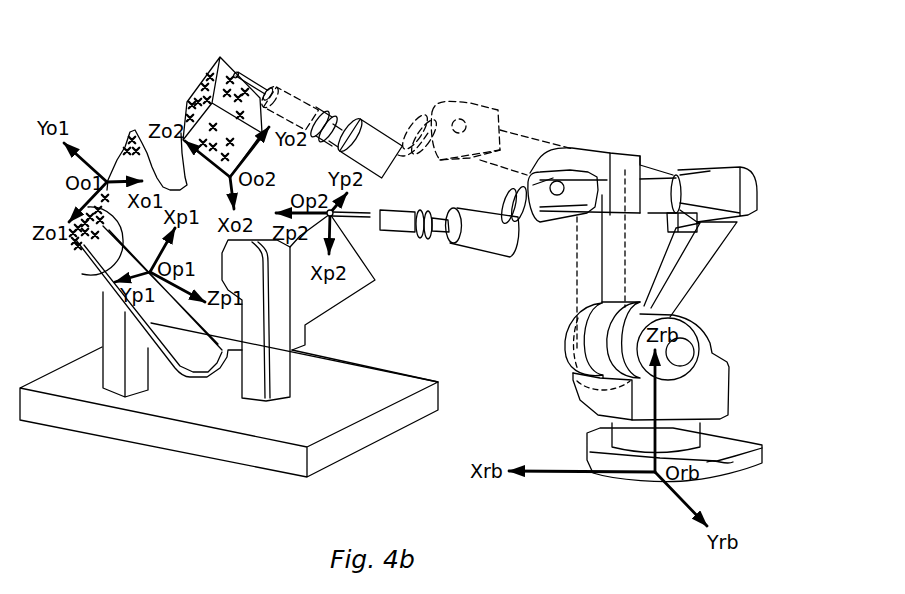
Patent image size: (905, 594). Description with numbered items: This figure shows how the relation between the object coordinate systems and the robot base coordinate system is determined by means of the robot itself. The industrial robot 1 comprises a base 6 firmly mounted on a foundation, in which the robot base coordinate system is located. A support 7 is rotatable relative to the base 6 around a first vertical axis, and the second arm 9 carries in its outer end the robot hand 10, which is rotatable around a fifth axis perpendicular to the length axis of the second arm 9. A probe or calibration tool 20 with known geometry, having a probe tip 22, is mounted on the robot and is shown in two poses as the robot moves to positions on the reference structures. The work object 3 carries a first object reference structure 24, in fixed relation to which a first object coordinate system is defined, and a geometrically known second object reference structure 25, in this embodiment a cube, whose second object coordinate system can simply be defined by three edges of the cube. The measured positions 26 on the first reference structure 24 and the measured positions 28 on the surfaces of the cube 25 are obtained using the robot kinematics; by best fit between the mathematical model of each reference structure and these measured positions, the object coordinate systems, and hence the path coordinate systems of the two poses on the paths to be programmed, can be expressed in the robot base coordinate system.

The industrial robot 1 is at (716, 292).
The work object 3 is at (333, 298).
The base 6 is at (727, 470).
The support 7 is at (722, 381).
The second arm 9 is at (696, 178).
The robot hand 10 is at (468, 118).
The measuring tool 20 is at (297, 102).
The tool tip 22 is at (239, 75).
The first object reference structure 24 is at (80, 274).
The second object reference structure 25 is at (221, 73).
The measurement points on workpiece 26 is at (82, 213).
The measurement points on calibration object 28 is at (198, 80).